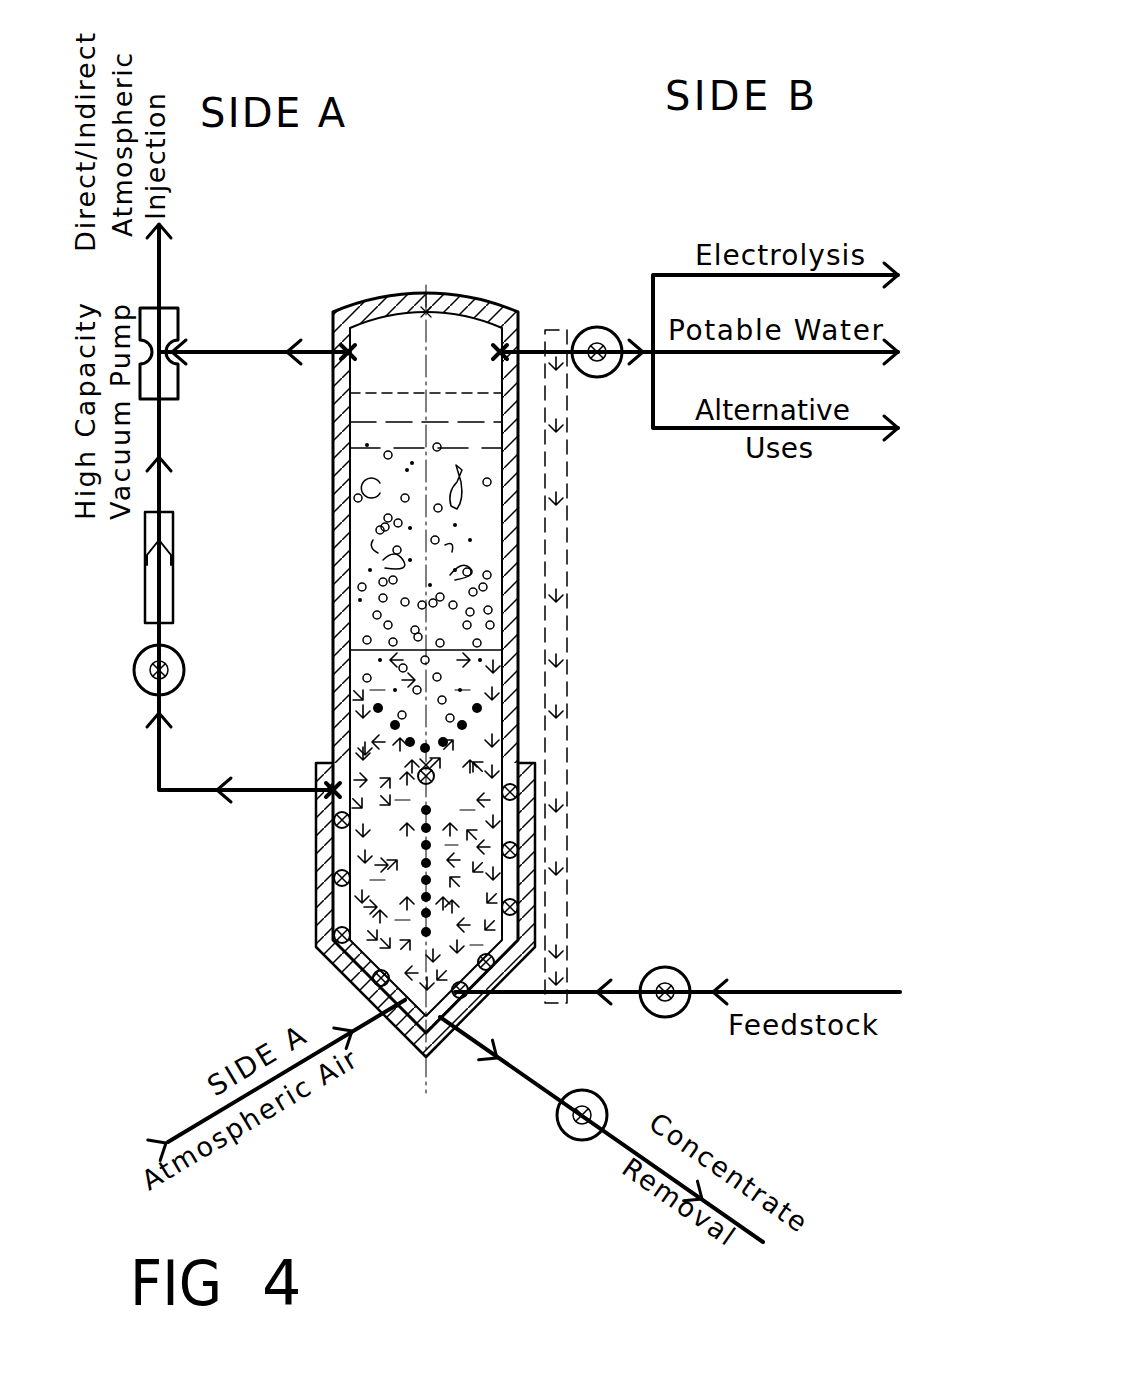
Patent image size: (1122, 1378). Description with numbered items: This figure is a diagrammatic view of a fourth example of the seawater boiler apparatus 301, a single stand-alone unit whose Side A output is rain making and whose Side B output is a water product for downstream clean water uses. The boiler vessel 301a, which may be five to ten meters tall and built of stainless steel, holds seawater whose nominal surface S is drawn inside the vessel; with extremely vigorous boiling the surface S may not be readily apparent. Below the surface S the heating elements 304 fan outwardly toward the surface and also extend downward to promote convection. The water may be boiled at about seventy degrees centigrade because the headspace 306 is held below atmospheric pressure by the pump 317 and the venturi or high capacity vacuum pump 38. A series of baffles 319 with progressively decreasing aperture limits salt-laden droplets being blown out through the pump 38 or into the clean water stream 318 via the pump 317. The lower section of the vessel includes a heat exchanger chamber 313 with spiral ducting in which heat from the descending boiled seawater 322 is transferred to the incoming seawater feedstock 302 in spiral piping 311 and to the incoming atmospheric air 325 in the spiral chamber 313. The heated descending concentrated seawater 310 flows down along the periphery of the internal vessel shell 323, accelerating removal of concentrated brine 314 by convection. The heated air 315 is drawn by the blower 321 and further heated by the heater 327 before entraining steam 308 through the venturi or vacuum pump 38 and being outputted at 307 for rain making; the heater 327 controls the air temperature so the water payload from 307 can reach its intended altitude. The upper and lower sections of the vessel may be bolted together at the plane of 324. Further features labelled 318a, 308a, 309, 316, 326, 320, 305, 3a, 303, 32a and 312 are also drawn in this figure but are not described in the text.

The seawater boiler apparatus 301 is at (415, 288).
The boiler vessel 301a is at (455, 365).
The headspace 306 is at (478, 313).
The water outlet conduit 318a is at (513, 340).
The pump 317 is at (600, 327).
The output 307 is at (162, 272).
The venturi or high capacity vacuum pump 38 is at (178, 328).
The steam 308 is at (245, 352).
The vacuum port 308a is at (337, 367).
The heater 327 is at (173, 517).
The valve 309 is at (178, 647).
The nominal surface S is at (345, 600).
The baffles 319 is at (352, 680).
The heated air 315 is at (162, 725).
The heat exchanger chamber 313 is at (323, 778).
The internal vessel shell 323 is at (335, 822).
The conical bottom 316 is at (400, 1003).
The incoming atmospheric air 325 is at (210, 1115).
The blower 321 is at (407, 1040).
The clean water stream 318 is at (630, 358).
The flow path 326 is at (567, 500).
The floating particle 320 is at (461, 500).
The bubbles 305 is at (480, 590).
The heating elements 304 is at (485, 645).
The particles 3a is at (503, 703).
The plane 324 is at (503, 757).
The descending boiled seawater 322 is at (520, 813).
The spiral piping 311 is at (520, 857).
The heated descending concentrated seawater 310 is at (533, 893).
The feedstock valve 303 is at (680, 973).
The incoming seawater feedstock 302 is at (818, 985).
The feedstock inlet 32a is at (468, 1005).
The concentrate valve 312 is at (607, 1113).
The concentrated brine 314 is at (627, 1147).